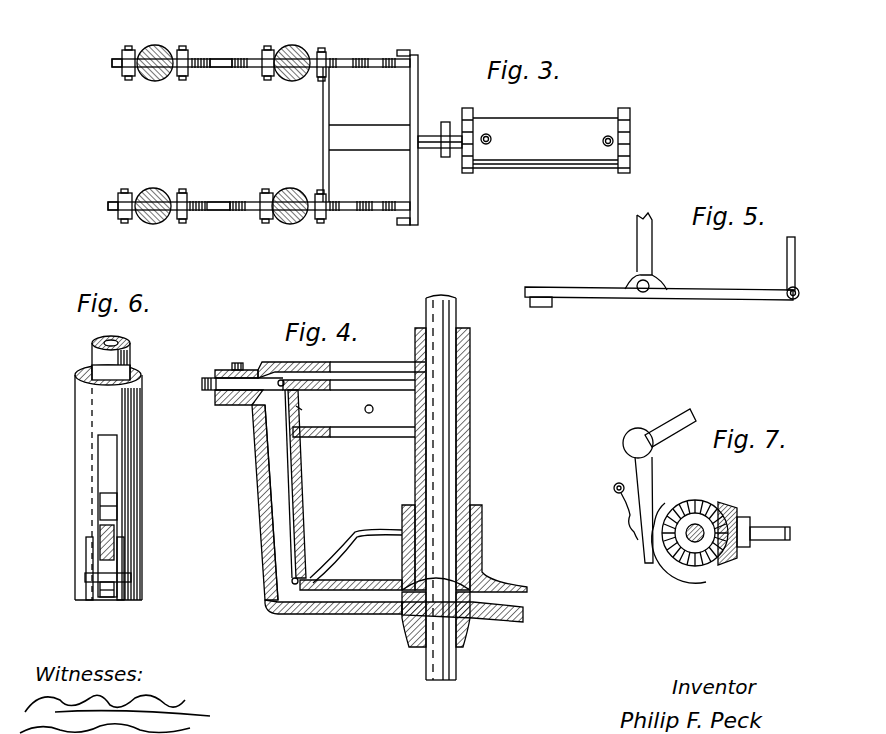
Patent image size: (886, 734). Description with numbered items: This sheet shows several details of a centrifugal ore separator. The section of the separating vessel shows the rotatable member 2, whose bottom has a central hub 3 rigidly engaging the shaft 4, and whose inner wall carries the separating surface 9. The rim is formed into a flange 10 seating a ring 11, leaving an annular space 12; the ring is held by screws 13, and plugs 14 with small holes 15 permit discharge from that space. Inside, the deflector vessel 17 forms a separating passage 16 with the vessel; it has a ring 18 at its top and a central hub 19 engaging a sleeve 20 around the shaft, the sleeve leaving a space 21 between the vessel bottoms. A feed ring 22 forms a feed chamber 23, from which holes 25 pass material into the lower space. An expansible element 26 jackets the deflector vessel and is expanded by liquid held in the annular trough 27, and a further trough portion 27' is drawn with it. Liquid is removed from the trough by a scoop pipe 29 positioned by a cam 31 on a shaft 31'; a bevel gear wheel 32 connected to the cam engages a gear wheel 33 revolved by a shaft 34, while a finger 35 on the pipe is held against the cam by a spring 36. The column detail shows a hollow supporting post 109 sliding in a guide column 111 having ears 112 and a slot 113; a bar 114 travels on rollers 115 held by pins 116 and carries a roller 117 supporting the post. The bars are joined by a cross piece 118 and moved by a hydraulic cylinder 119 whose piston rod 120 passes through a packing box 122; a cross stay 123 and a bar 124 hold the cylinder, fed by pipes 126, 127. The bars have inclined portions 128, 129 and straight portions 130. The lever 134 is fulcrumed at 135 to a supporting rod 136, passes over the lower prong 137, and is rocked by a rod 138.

In FIG. 4, the rotatable member 2 is at (255, 463).
In FIG. 4, the central hub 3 is at (472, 624).
In FIG. 4, the shaft 4 is at (448, 489).
In FIG. 4, the separating surface 9 is at (266, 581).
In FIG. 4, the flange 10 is at (225, 405).
In FIG. 4, the ring or plate 11 is at (320, 363).
In FIG. 4, the annular space 12 is at (270, 362).
In FIG. 4, the screws 13 is at (232, 365).
In FIG. 4, the plugs or members 14 is at (202, 383).
In FIG. 4, the small holes 15 is at (203, 386).
In FIG. 4, the separating passage 16 is at (262, 511).
In FIG. 4, the supporting element or deflector vessel 17 is at (303, 473).
In FIG. 4, the ring 18 is at (352, 403).
In FIG. 4, the central hub 19 is at (482, 533).
In FIG. 4, the sleeve 20 is at (470, 448).
In FIG. 4, the space 21 is at (372, 619).
In FIG. 4, the feed ring 22 is at (345, 541).
In FIG. 4, the feed chamber 23 is at (352, 576).
In FIG. 4, the holes 25 is at (325, 592).
In FIG. 4, the expansible element 26 is at (288, 531).
In FIG. 4, the annular trough 27 is at (354, 446).
In FIG. 4, the plate 27' is at (352, 374).
In FIG. 7, the scoop pipe 29 is at (668, 417).
In FIG. 7, the cam 31 is at (692, 550).
In FIG. 7, the shaft 31' is at (657, 560).
In FIG. 7, the bevel gear wheel 32 is at (706, 496).
In FIG. 7, the gear wheel 33 is at (735, 508).
In FIG. 7, the shaft 34 is at (770, 541).
In FIG. 7, the finger 35 is at (653, 472).
In FIG. 7, the spring 36 is at (632, 512).
In FIG. 6, the hollow supporting posts 109 is at (130, 360).
In FIG. 3, the hollow guide columns 111 is at (148, 80).
In FIG. 6, the hollow guide columns 111 is at (142, 429).
In FIG. 3, the wings or ears 112 is at (124, 52).
In FIG. 6, the wings or ears 112 is at (124, 557).
In FIG. 6, the slots 113 is at (104, 473).
In FIG. 3, the bar 114 is at (113, 68).
In FIG. 6, the bar 114 is at (100, 546).
In FIG. 6, the rollers 115 is at (104, 597).
In FIG. 6, the pins 116 is at (131, 579).
In FIG. 6, the roller 117 is at (116, 505).
In FIG. 3, the cross piece 118 is at (418, 65).
In FIG. 3, the hydraulic cylinder 119 is at (546, 140).
In FIG. 3, the piston rod 120 is at (434, 149).
In FIG. 3, the packing box 122 is at (448, 157).
In FIG. 3, the cross stay 123 is at (323, 136).
In FIG. 3, the bar 124 is at (374, 128).
In FIG. 3, the pipe 126 is at (608, 135).
In FIG. 3, the pipe 127 is at (490, 135).
In FIG. 3, the wedge-shaped or inclined portions 128 is at (201, 57).
In FIG. 3, the wedge-shaped or inclined portions 129 is at (228, 70).
In FIG. 3, the straight portions 130 is at (222, 57).
In FIG. 5, the lever 134 is at (604, 298).
In FIG. 5, the fulcrum 135 is at (637, 283).
In FIG. 5, the supporting rod 136 is at (652, 255).
In FIG. 5, the lower prong 137 is at (540, 307).
In FIG. 5, the rod 138 is at (787, 247).